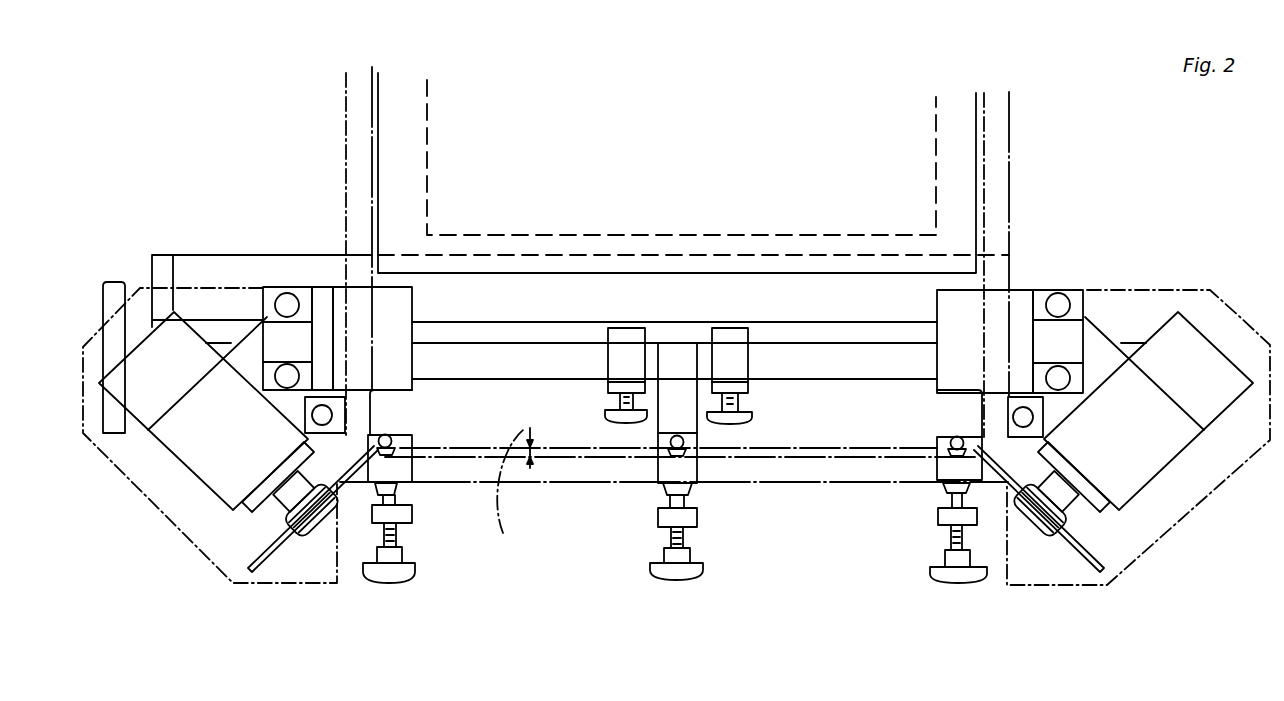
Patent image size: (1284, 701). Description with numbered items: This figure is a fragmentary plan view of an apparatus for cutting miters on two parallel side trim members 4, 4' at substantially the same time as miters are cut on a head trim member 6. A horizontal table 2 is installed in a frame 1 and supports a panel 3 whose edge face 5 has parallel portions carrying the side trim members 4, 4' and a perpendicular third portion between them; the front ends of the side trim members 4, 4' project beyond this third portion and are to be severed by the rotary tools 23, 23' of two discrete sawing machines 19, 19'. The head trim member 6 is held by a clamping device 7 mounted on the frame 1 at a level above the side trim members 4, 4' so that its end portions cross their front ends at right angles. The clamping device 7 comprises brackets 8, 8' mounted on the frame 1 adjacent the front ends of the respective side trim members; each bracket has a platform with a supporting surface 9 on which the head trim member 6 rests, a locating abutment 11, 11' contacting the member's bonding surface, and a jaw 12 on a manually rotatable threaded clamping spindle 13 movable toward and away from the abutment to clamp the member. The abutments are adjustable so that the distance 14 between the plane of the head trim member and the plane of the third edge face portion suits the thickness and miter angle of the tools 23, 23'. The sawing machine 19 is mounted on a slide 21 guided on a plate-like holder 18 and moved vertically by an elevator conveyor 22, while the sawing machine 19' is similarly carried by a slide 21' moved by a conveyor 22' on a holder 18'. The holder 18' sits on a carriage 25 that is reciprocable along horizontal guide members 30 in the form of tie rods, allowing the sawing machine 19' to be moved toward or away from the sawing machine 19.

The frame 1 is at (908, 157).
The table 2 is at (567, 267).
The panel 3 is at (510, 497).
The side trim member 4 is at (1025, 265).
The side trim member 4' is at (308, 254).
The edge face 5 is at (553, 445).
The head trim member 6 is at (582, 470).
The clamping device 7 is at (527, 613).
The bracket 8 is at (936, 499).
The bracket 8' is at (406, 509).
The supporting surface 9 is at (693, 495).
The abutment 11 is at (917, 477).
The abutment 11' is at (434, 476).
The jaw 12 is at (398, 494).
The clamping spindle 13 is at (955, 540).
The distance 14 is at (548, 450).
The holder 18 is at (1011, 340).
The holder 18' is at (310, 298).
The sawing machine 19 is at (1138, 454).
The sawing machine 19' is at (214, 436).
The slide 21 is at (1132, 389).
The slide 21' is at (220, 373).
The elevator conveyor 22 is at (1089, 315).
The conveyor 22' is at (273, 298).
The rotary tool 23 is at (1039, 543).
The rotary tool 23' is at (313, 545).
The carriage 25 is at (400, 308).
The guide members 30 is at (826, 372).